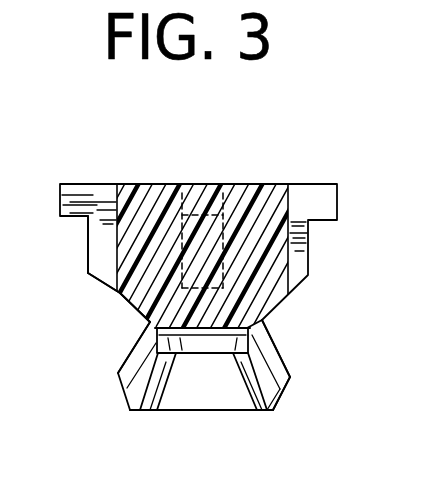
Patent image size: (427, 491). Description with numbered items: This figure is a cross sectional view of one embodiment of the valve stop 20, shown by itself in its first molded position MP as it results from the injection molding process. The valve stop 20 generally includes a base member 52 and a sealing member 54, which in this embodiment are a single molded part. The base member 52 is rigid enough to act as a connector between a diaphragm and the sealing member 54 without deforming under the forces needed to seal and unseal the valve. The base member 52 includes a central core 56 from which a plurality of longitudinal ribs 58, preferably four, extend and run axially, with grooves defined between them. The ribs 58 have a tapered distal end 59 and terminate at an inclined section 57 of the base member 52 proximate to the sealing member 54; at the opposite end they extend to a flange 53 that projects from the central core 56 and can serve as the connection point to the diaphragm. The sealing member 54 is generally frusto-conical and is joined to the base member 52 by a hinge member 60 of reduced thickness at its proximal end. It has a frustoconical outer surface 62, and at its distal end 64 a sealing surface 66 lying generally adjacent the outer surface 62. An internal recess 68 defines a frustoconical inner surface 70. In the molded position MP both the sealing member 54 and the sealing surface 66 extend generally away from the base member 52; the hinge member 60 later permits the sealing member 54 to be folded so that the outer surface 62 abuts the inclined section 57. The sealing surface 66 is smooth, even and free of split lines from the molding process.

The valve stop 20 is at (217, 153).
The base member 52 is at (152, 195).
The flange 53 is at (327, 200).
The sealing member 54 is at (135, 362).
The central core 56 is at (130, 232).
The inclined section 57 is at (132, 302).
The longitudinal ribs 58 is at (98, 263).
The tapered distal end 59 is at (104, 285).
The hinge member 60 is at (264, 323).
The frustoconical outer surface 62 is at (276, 346).
The distal end 64 is at (290, 378).
The sealing surface 66 is at (289, 391).
The internal recess 68 is at (212, 401).
The frustoconical inner surface 70 is at (157, 388).
The molded position MP is at (91, 403).